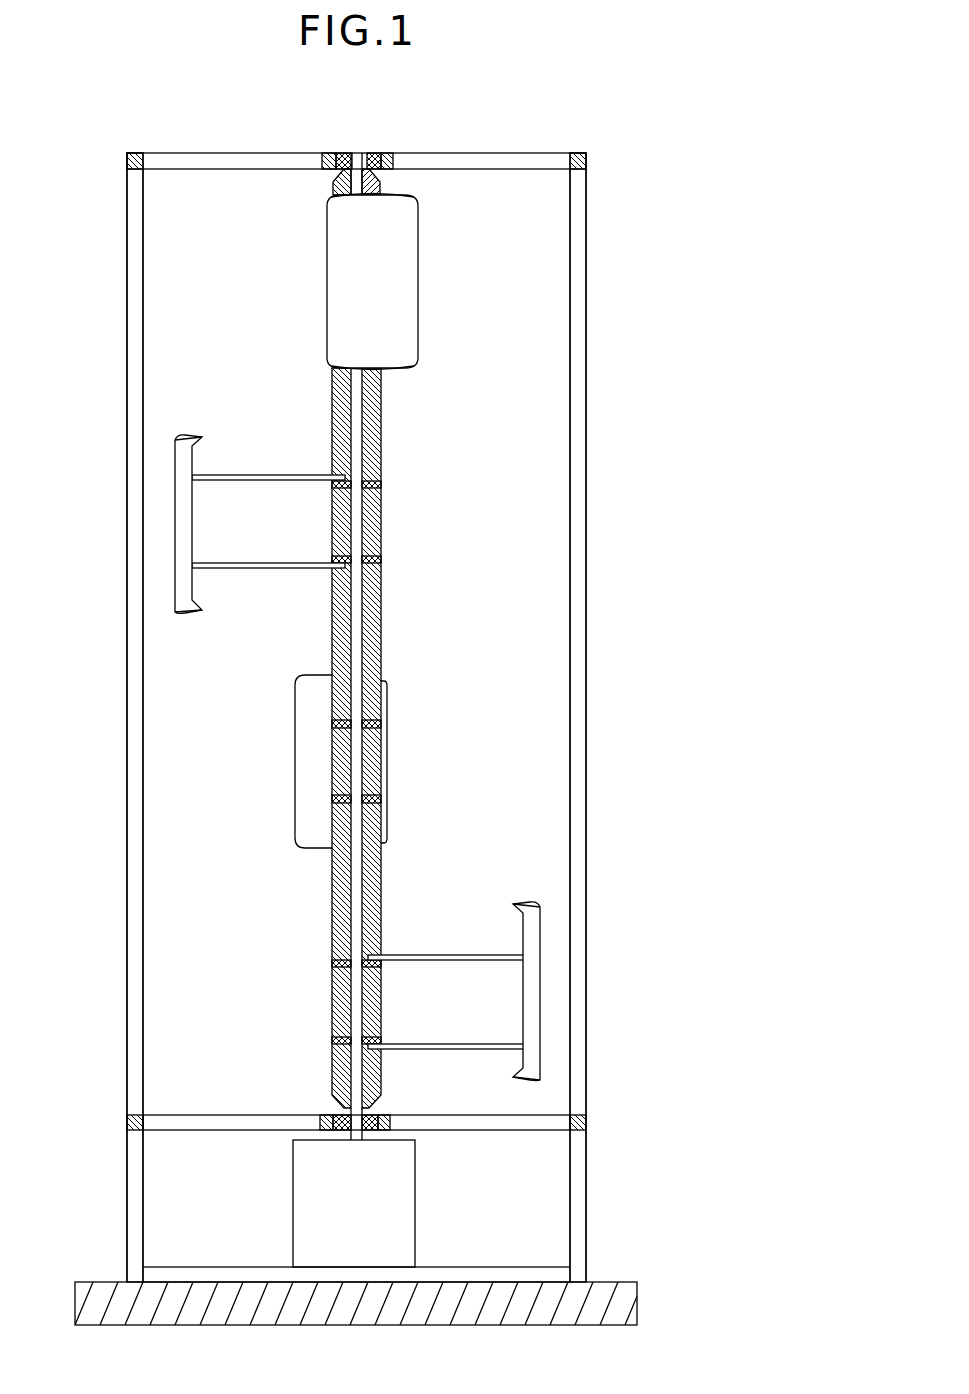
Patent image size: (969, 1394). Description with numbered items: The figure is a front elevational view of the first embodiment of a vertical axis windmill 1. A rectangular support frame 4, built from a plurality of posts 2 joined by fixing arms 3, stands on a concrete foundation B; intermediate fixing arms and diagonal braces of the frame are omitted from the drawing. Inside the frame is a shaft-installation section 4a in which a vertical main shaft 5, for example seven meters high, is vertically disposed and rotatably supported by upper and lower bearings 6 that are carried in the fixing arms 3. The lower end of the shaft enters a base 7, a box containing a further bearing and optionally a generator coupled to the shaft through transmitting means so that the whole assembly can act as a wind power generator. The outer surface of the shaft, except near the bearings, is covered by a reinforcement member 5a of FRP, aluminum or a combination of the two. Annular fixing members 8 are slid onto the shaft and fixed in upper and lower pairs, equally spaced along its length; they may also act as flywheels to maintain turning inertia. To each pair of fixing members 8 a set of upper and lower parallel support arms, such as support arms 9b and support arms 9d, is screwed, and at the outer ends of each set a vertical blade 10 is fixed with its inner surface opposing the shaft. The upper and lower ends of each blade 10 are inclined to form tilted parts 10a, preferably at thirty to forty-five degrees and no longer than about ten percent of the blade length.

The vertical axis windmill 1 is at (612, 213).
The post 2 is at (144, 262).
The fixing arm 3 is at (328, 153).
The support frame 4 is at (118, 896).
The shaft-installation section 4a is at (240, 946).
The vertical main shaft 5 is at (354, 153).
The reinforcement member 5a is at (382, 668).
The bearing 6 is at (372, 153).
The base 7 is at (366, 1229).
The fixing member 8 is at (382, 486).
The support arm 9b is at (235, 475).
The support arm 9d is at (438, 955).
The blade 10 is at (418, 288).
The tilted part 10a is at (186, 436).
The concrete foundation B is at (640, 1296).